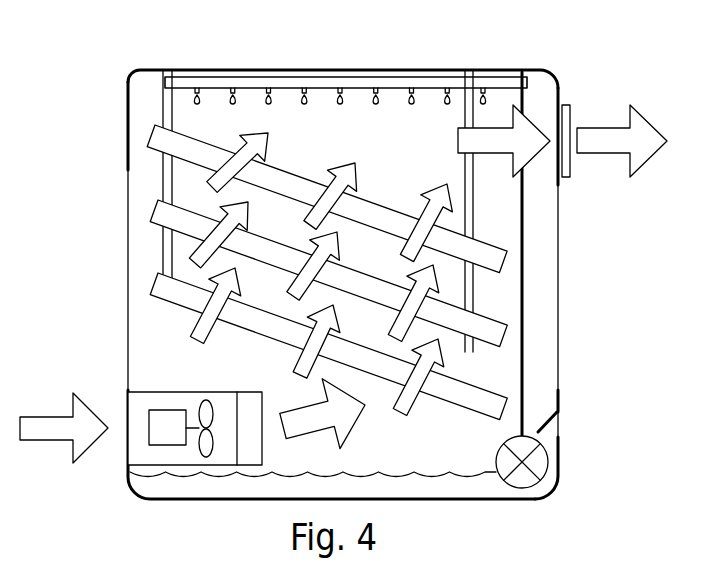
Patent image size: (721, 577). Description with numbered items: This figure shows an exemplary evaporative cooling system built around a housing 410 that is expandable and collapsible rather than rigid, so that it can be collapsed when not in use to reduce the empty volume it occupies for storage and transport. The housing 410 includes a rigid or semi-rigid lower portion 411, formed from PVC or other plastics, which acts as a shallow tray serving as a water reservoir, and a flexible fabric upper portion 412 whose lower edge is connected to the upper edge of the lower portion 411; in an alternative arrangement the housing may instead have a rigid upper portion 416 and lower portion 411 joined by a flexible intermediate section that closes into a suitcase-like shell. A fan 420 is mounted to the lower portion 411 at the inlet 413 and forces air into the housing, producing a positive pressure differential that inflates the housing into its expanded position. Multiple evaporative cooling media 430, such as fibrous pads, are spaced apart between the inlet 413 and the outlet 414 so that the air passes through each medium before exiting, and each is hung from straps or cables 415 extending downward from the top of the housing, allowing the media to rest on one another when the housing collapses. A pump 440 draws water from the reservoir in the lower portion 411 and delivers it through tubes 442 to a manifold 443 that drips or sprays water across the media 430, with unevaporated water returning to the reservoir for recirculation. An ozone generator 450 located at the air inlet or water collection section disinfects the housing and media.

The housing 410 is at (538, 52).
The lower portion 411 is at (558, 393).
The upper portion 412 is at (558, 281).
The inlet 413 is at (128, 444).
The outlet 414 is at (568, 105).
The straps or cables 415 is at (465, 115).
The rigid upper portion 416 is at (128, 92).
The fan 420 is at (150, 392).
The evaporative cooling media 430 is at (155, 150).
The pump 440 is at (548, 464).
The tubes 442 is at (522, 327).
The manifold 443 is at (447, 76).
The ozone generator 450 is at (262, 455).